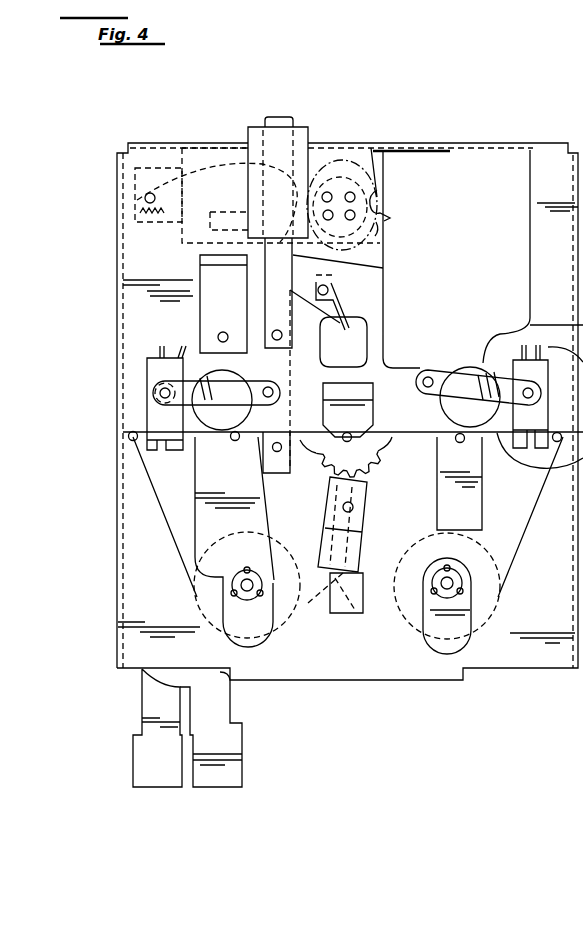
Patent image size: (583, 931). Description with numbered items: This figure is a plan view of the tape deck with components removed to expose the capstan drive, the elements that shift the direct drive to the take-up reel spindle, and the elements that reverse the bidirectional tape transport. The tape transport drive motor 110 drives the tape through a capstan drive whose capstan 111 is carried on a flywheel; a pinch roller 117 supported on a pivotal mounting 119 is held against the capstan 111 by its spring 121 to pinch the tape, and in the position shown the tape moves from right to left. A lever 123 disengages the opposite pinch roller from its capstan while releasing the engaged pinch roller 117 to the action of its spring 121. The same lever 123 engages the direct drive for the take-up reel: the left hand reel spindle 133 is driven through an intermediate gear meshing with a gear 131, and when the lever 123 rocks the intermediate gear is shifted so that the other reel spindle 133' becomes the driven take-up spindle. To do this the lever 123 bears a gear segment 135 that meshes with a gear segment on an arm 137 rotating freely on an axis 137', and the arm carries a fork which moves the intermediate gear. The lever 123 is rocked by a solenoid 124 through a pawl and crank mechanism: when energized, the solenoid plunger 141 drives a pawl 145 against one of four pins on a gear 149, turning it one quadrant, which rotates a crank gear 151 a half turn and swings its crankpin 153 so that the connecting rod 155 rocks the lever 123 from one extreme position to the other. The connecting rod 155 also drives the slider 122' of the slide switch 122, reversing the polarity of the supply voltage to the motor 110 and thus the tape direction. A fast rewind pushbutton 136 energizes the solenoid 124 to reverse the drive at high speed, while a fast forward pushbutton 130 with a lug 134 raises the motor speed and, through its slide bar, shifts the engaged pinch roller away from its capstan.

The tape transport drive motor 110 is at (478, 299).
The capstan 111 is at (235, 440).
The pinch roller 117 is at (187, 407).
The pivotal mounting 119 is at (197, 368).
The spring 121 is at (200, 375).
The slide switch 122 is at (267, 155).
The slider 122' is at (289, 91).
The lever 123 is at (323, 448).
The solenoid 124 is at (198, 165).
The fast forward pushbutton 130 is at (242, 768).
The gear 131 is at (197, 593).
The reel spindle 133 is at (263, 579).
The reel spindle 133' is at (477, 579).
The lug 134 is at (308, 603).
The gear segment 135 is at (372, 453).
The fast rewind pushbutton 136 is at (132, 767).
The arm 137 is at (365, 524).
The axis 137' is at (312, 517).
The solenoid plunger 141 is at (143, 173).
The pawl 145 is at (335, 160).
The gear 149 is at (378, 240).
The crank gear 151 is at (262, 235).
The crankpin 153 is at (250, 189).
The connecting rod 155 is at (247, 279).